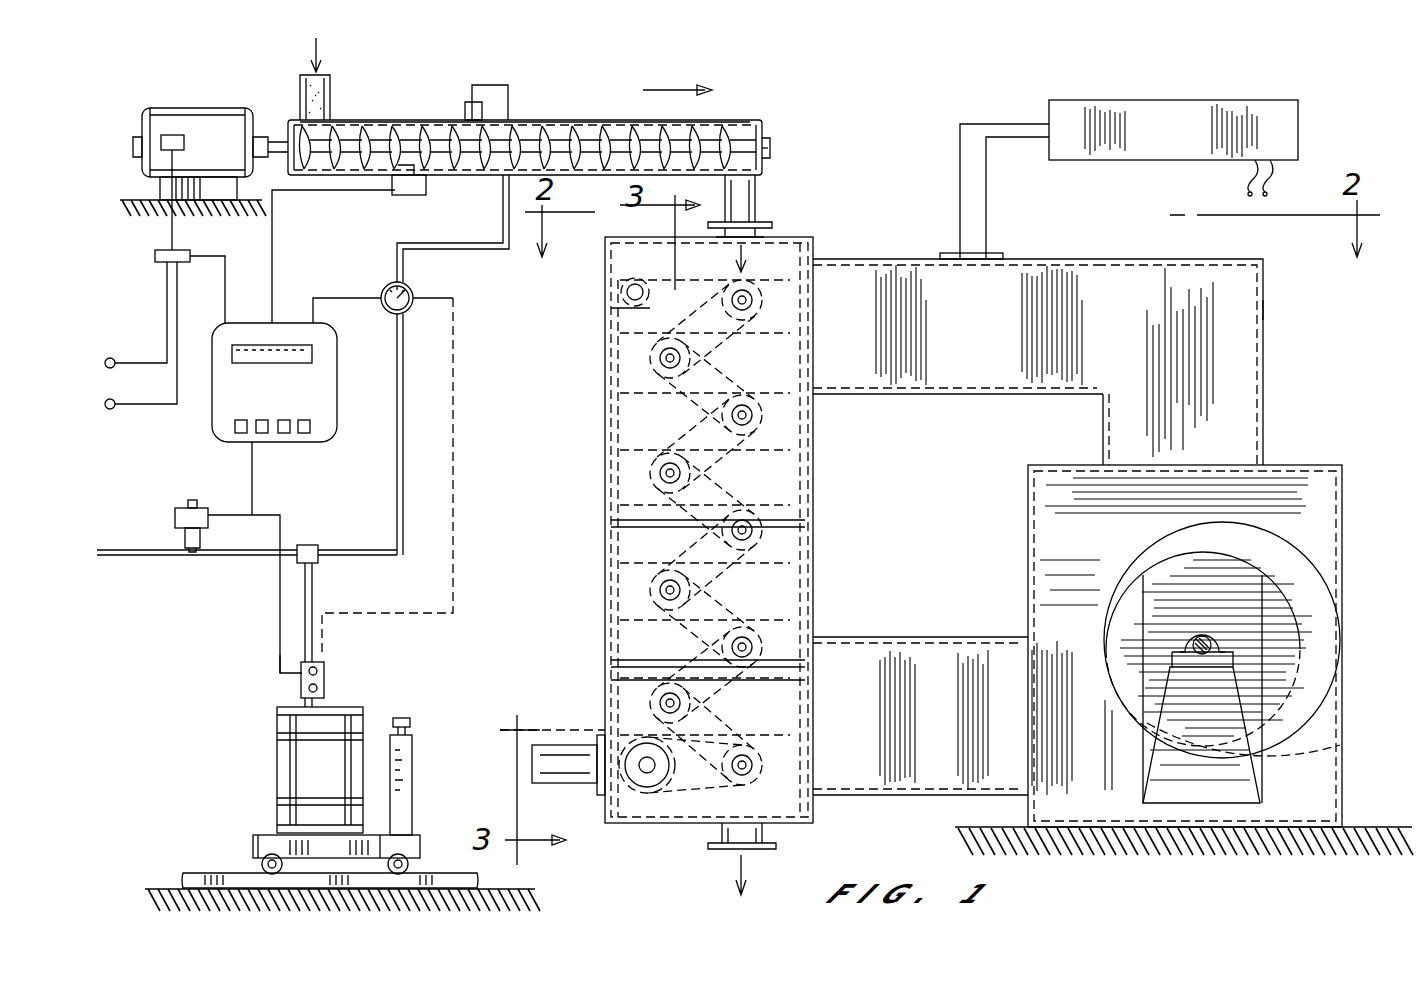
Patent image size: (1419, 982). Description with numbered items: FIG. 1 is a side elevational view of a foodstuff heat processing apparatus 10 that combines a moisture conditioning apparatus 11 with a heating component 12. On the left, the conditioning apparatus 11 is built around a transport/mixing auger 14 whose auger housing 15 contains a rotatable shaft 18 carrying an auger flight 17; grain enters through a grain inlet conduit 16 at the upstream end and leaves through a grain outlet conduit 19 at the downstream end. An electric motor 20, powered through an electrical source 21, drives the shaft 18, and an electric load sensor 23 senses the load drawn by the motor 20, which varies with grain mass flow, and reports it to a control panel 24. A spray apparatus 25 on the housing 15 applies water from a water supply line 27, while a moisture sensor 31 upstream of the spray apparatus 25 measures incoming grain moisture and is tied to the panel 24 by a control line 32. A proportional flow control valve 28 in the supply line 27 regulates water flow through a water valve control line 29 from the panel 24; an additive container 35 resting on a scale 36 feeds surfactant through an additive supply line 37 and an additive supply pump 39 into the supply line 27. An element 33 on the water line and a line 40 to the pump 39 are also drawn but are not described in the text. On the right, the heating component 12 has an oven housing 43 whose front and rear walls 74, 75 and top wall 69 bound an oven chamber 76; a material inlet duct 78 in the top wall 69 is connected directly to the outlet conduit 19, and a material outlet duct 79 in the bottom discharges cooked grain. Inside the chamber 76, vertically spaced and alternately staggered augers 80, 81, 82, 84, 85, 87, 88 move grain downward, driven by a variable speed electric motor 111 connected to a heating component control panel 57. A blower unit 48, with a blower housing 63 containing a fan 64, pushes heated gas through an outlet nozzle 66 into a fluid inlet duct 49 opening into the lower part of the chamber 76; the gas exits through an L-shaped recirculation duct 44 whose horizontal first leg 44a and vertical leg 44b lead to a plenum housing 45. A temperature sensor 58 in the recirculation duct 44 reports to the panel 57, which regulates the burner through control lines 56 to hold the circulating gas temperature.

The foodstuff heat processing apparatus 10 is at (797, 104).
The moisture conditioning apparatus 11 is at (478, 424).
The heating component 12 is at (1293, 310).
The transport/mixing auger 14 is at (541, 104).
The auger housing 15 is at (404, 120).
The grain inlet conduit 16 is at (330, 92).
The auger flight 17 is at (348, 126).
The rotatable shaft 18 is at (568, 140).
The grain outlet conduit 19 is at (760, 186).
The electric motor 20 is at (190, 106).
The electrical source 21 is at (110, 357).
The electric load sensor 23 is at (156, 258).
The control panel 24 is at (215, 413).
The spray apparatus 25 is at (460, 100).
The water supply line 27 is at (403, 428).
The proportional flow control valve 28 is at (175, 520).
The water valve control line 29 is at (255, 488).
The moisture sensor 31 is at (395, 190).
The control line 32 is at (275, 243).
The pressure gauge 33 is at (414, 288).
The additive container 35 is at (363, 722).
The scale 36 is at (412, 782).
The additive supply line 37 is at (302, 612).
The additive supply pump 39 is at (325, 680).
The control wire 40 is at (280, 664).
The oven housing 43 is at (838, 520).
The L-shaped recirculation duct 44 is at (1070, 262).
The first leg 44a is at (862, 262).
The vertical leg 44b is at (1285, 366).
The plenum housing 45 is at (1290, 466).
The blower unit 48 is at (1365, 645).
The fluid inlet duct 49 is at (950, 638).
The control lines 56 is at (1235, 180).
The heating component control panel 57 is at (1300, 130).
The temperature sensor 58 is at (962, 255).
The blower housing 63 is at (1315, 712).
The fan 64 is at (1265, 722).
The outlet nozzle 66 is at (1118, 778).
The top wall 69 is at (612, 237).
The front wall 74 is at (820, 492).
The rear wall 75 is at (606, 552).
The oven chamber 76 is at (655, 514).
The material inlet duct 78 is at (770, 233).
The material outlet duct 79 is at (712, 836).
The first auger 80 is at (764, 305).
The second auger 81 is at (650, 355).
The third auger 82 is at (764, 420).
The fifth auger 84 is at (764, 538).
The sixth auger 85 is at (650, 600).
The eighth auger 87 is at (650, 703).
The ninth auger 88 is at (764, 765).
The variable speed electric motor 111 is at (582, 790).